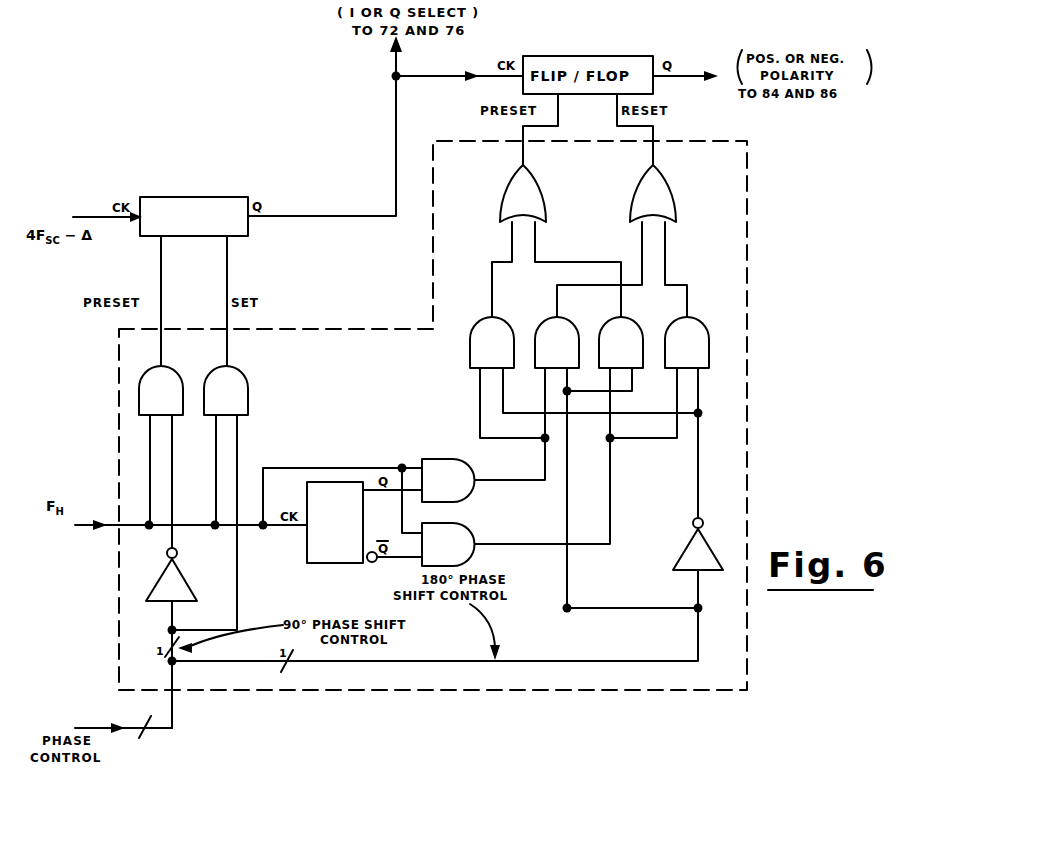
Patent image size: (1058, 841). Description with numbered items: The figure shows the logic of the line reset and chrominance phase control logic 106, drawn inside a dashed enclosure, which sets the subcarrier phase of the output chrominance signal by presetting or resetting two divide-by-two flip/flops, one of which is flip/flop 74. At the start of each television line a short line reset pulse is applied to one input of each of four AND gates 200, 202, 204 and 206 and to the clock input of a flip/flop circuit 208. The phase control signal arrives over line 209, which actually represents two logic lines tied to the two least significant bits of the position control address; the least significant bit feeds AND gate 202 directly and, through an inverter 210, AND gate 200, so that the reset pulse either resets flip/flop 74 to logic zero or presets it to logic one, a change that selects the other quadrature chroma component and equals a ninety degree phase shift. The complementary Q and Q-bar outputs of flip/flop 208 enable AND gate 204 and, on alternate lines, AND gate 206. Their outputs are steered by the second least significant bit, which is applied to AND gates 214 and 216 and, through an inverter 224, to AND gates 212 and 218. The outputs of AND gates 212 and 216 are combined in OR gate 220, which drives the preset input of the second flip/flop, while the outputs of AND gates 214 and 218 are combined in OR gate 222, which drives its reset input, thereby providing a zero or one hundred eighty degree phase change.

The flip/flop 74 is at (203, 197).
The line reset and chrominance phase control logic 106 is at (747, 185).
The AND gate 200 is at (168, 362).
The AND gate 202 is at (233, 362).
The AND gate 204 is at (453, 456).
The AND gate 206 is at (464, 521).
The flip/flop circuit 208 is at (307, 563).
The line 209 is at (173, 677).
The inverter 210 is at (187, 583).
The AND gate 212 is at (483, 315).
The AND gate 214 is at (550, 315).
The AND gate 216 is at (631, 317).
The AND gate 218 is at (697, 317).
The OR gate 220 is at (517, 170).
The OR gate 222 is at (660, 172).
The inverter 224 is at (686, 549).